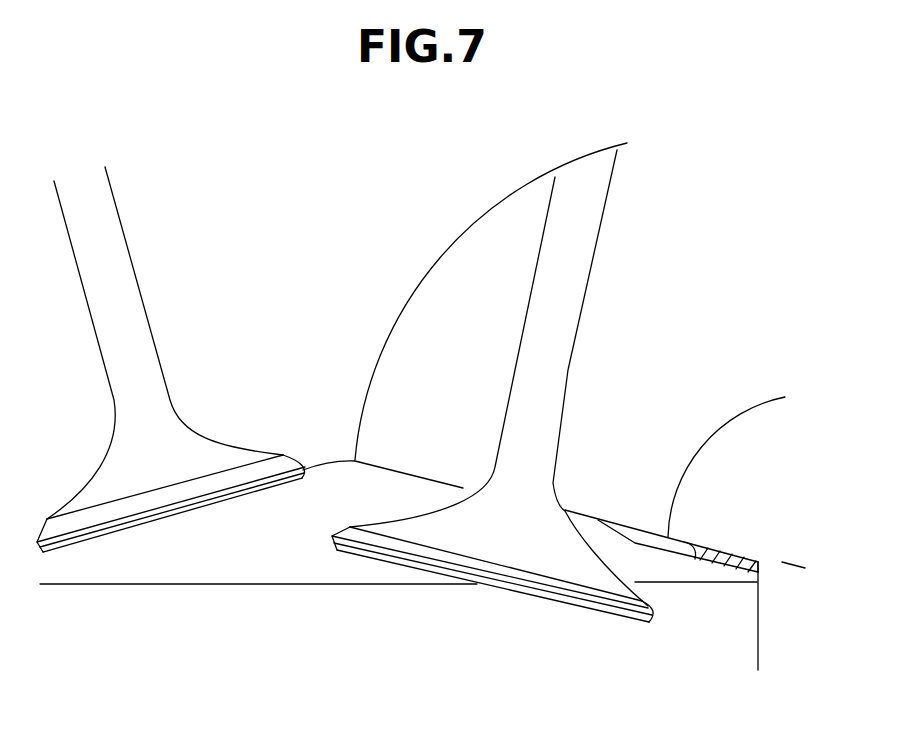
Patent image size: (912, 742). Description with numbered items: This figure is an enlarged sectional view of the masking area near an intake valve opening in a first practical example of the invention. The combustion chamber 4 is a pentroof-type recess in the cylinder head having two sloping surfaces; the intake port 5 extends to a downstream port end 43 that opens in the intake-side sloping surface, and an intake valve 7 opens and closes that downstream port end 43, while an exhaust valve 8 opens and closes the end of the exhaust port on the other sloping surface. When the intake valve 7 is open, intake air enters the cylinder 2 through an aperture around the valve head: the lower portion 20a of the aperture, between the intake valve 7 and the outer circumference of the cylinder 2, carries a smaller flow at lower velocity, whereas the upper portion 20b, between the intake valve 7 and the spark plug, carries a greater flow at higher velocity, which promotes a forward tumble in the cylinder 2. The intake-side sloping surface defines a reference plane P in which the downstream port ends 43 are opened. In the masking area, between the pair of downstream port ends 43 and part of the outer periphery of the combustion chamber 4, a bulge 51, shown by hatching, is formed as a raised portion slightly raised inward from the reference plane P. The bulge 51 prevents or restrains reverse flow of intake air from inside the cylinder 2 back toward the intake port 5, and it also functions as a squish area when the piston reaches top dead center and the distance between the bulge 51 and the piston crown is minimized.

The cylinder 2 is at (757, 633).
The combustion chamber 4 is at (213, 570).
The intake port 5 is at (698, 415).
The intake valve 7 is at (565, 337).
The exhaust valve 8 is at (130, 412).
The downstream port end 43 is at (433, 467).
The bulge 51 is at (685, 548).
The lower portion of the open aperture 20a is at (652, 565).
The upper portion of the aperture 20b is at (353, 497).
The reference plane P is at (760, 560).